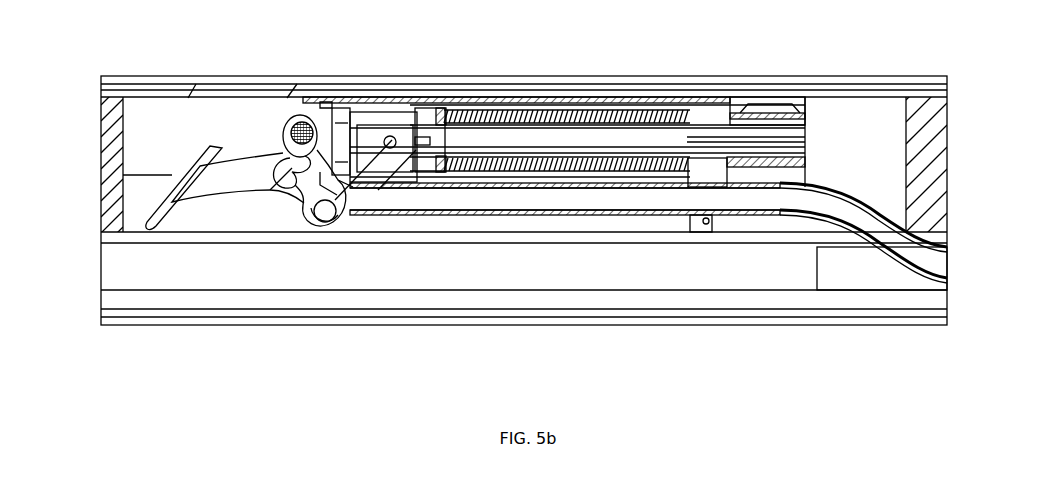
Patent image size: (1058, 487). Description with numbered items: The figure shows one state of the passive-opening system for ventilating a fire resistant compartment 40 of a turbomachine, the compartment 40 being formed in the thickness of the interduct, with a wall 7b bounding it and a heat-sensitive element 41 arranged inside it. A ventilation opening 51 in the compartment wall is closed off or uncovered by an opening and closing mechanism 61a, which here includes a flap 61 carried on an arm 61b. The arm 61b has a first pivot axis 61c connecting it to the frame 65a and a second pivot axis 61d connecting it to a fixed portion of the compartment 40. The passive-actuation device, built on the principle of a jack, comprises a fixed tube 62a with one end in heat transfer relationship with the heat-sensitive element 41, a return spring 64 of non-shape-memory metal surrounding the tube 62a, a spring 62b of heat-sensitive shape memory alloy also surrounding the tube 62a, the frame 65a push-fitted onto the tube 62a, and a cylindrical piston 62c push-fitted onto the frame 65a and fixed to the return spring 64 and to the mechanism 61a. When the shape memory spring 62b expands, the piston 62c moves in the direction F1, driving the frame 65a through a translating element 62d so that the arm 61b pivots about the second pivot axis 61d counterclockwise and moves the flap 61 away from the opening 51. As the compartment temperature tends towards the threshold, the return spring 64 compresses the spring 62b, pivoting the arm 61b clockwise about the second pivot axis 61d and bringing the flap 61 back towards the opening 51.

The housing top wall 7b is at (156, 76).
The force direction F1 is at (232, 107).
The ventilation opening 51 is at (290, 74).
The frame 65a is at (318, 116).
The return spring 64 is at (478, 100).
The spring 62b is at (654, 108).
The fixed tube 62a is at (753, 137).
The arm 61b is at (212, 186).
The flap 61 is at (192, 235).
The mechanism 61a is at (202, 214).
The first pivot axis 61c is at (300, 138).
The second pivot axis 61d is at (323, 205).
The translating element 62d is at (388, 114).
The piston 62c is at (437, 142).
The compartment 40 is at (707, 273).
The heat-sensitive element 41 is at (893, 257).